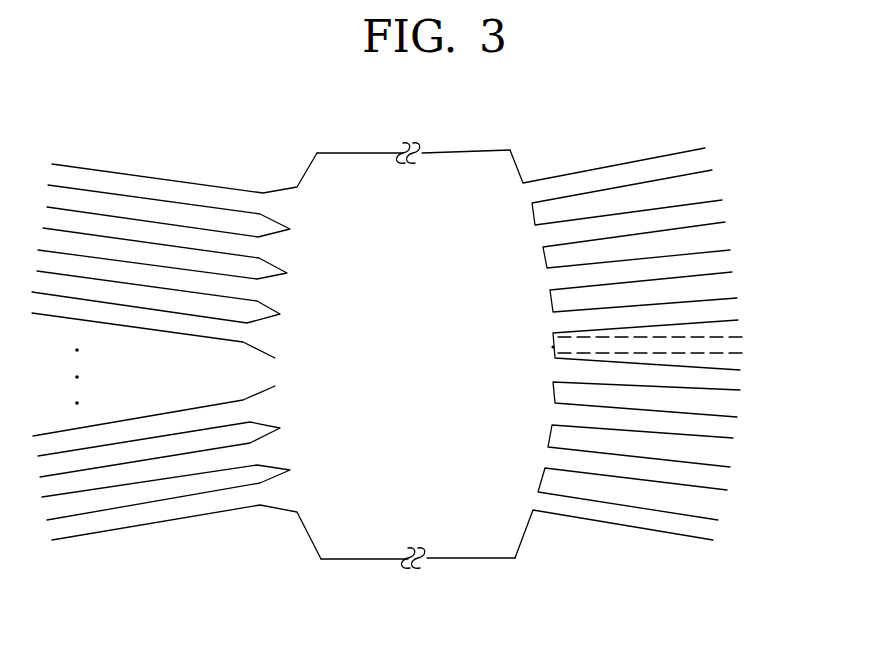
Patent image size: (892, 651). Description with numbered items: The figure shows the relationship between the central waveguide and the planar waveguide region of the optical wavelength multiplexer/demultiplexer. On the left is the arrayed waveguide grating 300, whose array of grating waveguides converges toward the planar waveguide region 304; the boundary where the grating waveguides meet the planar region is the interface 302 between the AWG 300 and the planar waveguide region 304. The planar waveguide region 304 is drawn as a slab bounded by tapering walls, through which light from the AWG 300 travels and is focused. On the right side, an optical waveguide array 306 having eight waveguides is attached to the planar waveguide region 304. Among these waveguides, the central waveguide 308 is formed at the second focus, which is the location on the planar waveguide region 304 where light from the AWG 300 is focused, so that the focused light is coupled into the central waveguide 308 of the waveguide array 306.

The arrayed waveguide grating 300 is at (158, 532).
The interface 302 is at (299, 539).
The planar waveguide region 304 is at (477, 542).
The optical waveguide array 306 is at (595, 539).
The central waveguide 308 is at (733, 349).